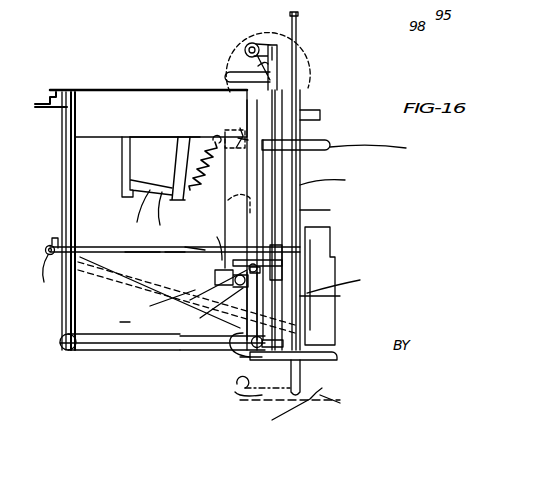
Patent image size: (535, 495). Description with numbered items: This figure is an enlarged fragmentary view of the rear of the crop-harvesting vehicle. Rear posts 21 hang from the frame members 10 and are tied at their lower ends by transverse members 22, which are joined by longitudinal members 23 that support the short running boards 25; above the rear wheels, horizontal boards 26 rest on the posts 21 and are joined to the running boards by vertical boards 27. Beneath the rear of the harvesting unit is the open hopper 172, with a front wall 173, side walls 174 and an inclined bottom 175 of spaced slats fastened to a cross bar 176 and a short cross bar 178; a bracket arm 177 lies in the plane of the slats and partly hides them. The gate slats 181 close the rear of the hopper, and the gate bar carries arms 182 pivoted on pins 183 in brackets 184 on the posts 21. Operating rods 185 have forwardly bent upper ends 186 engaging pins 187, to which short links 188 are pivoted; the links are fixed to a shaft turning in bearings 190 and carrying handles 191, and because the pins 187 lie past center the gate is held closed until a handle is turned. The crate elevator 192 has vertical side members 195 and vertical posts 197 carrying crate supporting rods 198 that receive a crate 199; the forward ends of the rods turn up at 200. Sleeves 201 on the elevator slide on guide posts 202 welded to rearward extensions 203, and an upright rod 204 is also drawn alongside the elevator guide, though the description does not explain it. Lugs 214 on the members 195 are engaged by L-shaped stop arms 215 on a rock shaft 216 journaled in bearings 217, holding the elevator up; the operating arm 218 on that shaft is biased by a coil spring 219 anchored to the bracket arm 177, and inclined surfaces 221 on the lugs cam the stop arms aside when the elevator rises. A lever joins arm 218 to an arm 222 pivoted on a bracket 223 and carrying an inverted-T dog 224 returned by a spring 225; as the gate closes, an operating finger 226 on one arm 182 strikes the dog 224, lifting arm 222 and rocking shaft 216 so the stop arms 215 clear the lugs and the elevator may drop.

The frame members 10 is at (112, 90).
The posts 21 is at (62, 207).
The transverse members 22 is at (65, 343).
The longitudinal members 23 is at (108, 352).
The short running boards 25 is at (110, 310).
The horizontal boards 26 is at (50, 110).
The vertical boards 27 is at (76, 207).
The open hopper 172 is at (137, 213).
The front wall 173 is at (130, 157).
The side walls 174 is at (152, 137).
The inclined bottom 175 is at (172, 213).
The cross bar 176 is at (137, 243).
The bracket arm 177 is at (307, 188).
The short cross bar 178 is at (178, 238).
The slats 181 is at (169, 306).
The arm 182 is at (140, 255).
The pin 183 is at (44, 284).
The bracket 184 is at (50, 245).
The operating rods 185 is at (307, 223).
The forwardly extending upper end 186 is at (273, 46).
The pin 187 is at (246, 46).
The short link 188 is at (252, 72).
The bearings 190 is at (296, 73).
The handles 191 is at (226, 75).
The crate elevator 192 is at (300, 185).
The vertical side members 195 is at (330, 247).
The vertical posts 197 is at (307, 238).
The crate supporting rods 198 is at (252, 375).
The crate 199 is at (332, 327).
The upwardly turned portion 200 is at (272, 395).
The annular sleeves 201 is at (297, 112).
The guide posts 202 is at (358, 280).
The rearward extensions 203 is at (300, 94).
The rod 204 is at (296, 22).
The lug 214 is at (378, 156).
The stop arms 215 is at (381, 147).
The rock shaft 216 is at (226, 136).
The bearings 217 is at (240, 128).
The operating arm 218 is at (331, 143).
The coil spring 219 is at (180, 153).
The inclined surface 221 is at (227, 188).
The arm 222 is at (240, 355).
The bracket 223 is at (250, 292).
The dog 224 is at (212, 280).
The spring 225 is at (215, 264).
The operating finger 226 is at (192, 245).